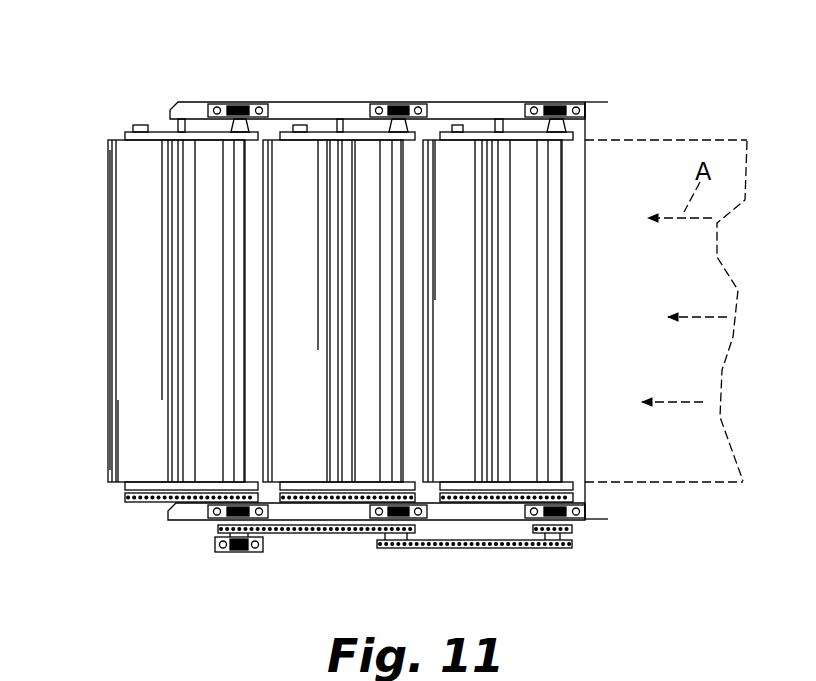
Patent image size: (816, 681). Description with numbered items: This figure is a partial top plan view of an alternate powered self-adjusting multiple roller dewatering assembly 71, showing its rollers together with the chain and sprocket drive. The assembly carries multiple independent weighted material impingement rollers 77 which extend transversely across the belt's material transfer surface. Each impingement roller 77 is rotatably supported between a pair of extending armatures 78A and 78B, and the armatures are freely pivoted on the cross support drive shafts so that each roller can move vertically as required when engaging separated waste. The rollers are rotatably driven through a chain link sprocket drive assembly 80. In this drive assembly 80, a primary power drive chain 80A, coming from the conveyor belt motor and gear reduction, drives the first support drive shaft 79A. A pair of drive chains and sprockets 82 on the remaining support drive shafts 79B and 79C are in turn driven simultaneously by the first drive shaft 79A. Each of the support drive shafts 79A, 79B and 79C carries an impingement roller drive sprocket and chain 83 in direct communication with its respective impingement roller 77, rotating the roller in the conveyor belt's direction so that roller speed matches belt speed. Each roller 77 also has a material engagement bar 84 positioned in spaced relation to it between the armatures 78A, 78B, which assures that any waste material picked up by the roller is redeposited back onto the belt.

The powered self-adjusting multiple roller dewatering assembly 71 is at (568, 73).
The weighted material impingement roller 77 is at (133, 325).
The extending armature 78A is at (200, 140).
The extending armature 78B is at (163, 492).
The first support drive shaft 79A is at (243, 173).
The support drive shaft 79B is at (403, 170).
The support drive shaft 79C is at (552, 172).
The chain link sprocket drive assembly 80 is at (172, 540).
The primary power drive chain 80A is at (247, 553).
The drive chains and sprockets 82 is at (322, 541).
The impingement roller drive sprocket and chain 83 is at (145, 502).
The material engagement bar 84 is at (363, 183).